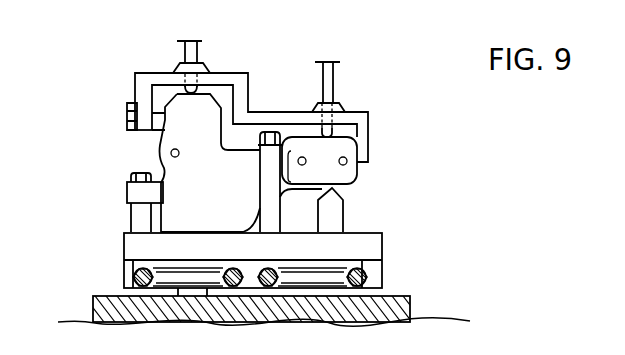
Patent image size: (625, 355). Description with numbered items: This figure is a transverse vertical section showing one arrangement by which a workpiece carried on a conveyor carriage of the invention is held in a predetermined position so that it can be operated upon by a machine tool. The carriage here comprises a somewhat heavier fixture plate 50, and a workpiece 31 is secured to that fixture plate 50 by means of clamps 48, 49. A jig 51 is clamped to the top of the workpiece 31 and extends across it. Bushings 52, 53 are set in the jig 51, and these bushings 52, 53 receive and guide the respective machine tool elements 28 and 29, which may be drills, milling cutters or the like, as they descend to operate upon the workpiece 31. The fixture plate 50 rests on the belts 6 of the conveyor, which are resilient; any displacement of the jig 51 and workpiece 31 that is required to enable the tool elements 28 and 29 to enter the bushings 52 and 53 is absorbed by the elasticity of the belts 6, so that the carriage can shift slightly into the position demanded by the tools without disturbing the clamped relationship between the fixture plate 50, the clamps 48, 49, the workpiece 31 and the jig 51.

The belts 6 is at (137, 273).
The machine tool element 28 is at (190, 50).
The machine tool element 29 is at (328, 87).
The workpiece 31 is at (221, 198).
The clamp 48 is at (132, 216).
The clamp 49 is at (332, 220).
The fixture plate 50 is at (384, 245).
The jig 51 is at (285, 112).
The bushing 52 is at (174, 70).
The bushing 53 is at (343, 108).